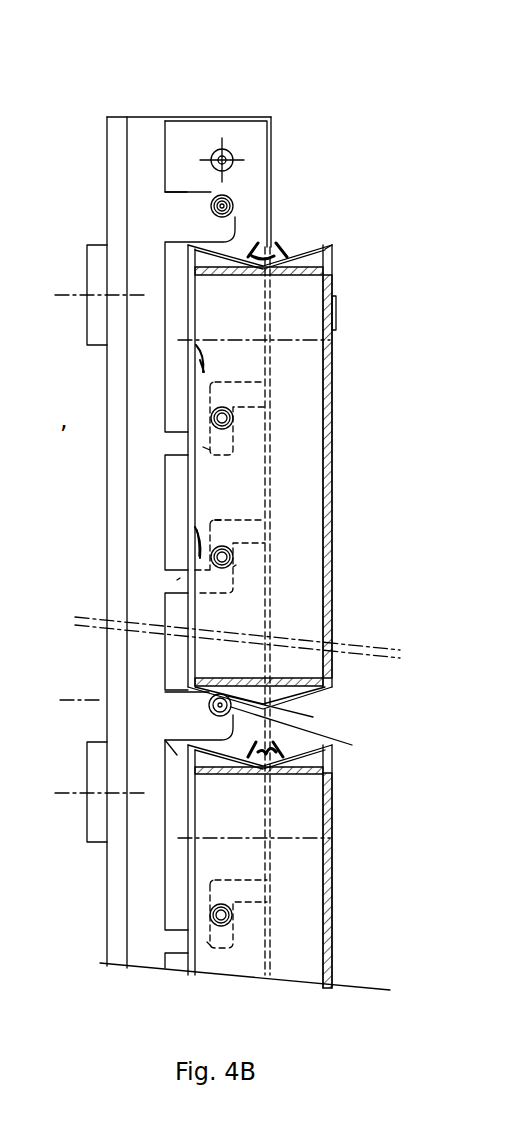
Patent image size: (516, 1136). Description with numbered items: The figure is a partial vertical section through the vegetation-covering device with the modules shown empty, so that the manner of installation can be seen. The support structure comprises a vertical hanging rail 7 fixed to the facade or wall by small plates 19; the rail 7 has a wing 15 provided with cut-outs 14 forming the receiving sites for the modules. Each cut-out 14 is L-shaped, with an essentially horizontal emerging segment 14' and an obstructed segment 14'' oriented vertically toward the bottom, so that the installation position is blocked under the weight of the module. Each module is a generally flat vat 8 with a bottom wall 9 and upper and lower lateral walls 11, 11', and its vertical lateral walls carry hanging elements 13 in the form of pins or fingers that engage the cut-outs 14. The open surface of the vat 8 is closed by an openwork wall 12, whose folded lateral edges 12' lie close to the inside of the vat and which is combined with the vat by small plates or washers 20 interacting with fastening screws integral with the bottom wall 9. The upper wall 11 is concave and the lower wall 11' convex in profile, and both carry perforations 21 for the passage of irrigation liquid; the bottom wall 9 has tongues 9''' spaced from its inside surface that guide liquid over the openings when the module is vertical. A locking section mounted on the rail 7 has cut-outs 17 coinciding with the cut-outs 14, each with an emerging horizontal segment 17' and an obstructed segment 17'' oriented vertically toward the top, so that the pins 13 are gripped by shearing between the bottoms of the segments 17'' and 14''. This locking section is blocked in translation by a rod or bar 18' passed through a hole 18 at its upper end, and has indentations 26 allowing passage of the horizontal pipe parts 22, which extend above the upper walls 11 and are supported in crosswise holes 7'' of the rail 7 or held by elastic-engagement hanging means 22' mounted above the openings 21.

The rail 7 is at (182, 506).
The wing 15 is at (148, 138).
The indentation 26 is at (187, 192).
The hole 18 is at (263, 160).
The rod or bar 18' is at (255, 120).
The horizontal pipe part 22 is at (297, 467).
The crosswise hole 7'' is at (196, 454).
The means for stationary hanging 22' is at (319, 489).
The openwork wall 12 is at (287, 466).
The upper lateral wall 11 is at (287, 239).
The lower lateral wall 11' is at (290, 696).
The folded lateral edge 12' is at (363, 259).
The small plate or washer 20 is at (336, 318).
The perforation 21 is at (270, 842).
The small plate 19 is at (93, 273).
The cut-out 14 is at (303, 649).
The emerging segment 14' is at (293, 545).
The obstructed segment 14'' is at (135, 505).
The hanging element 13 is at (233, 418).
The cut-out 17 is at (294, 742).
The emerging segment 17' is at (115, 626).
The obstructed segment 17'' is at (316, 565).
The vat 8 is at (190, 447).
The bottom wall 9 is at (137, 482).
The tongue 9''' is at (127, 542).